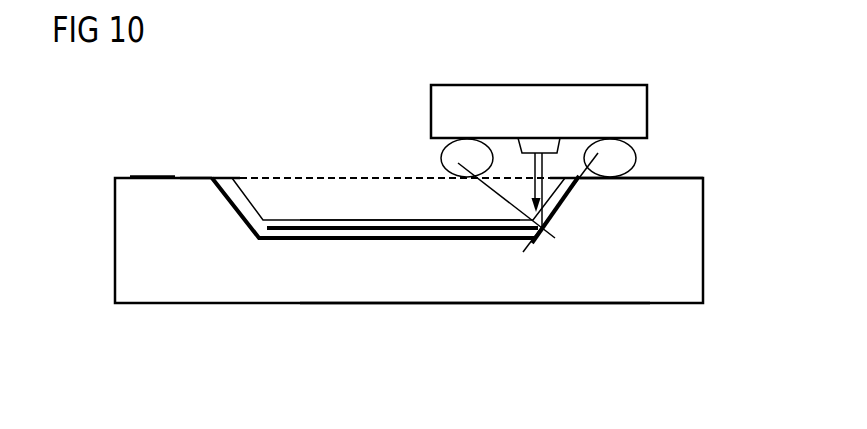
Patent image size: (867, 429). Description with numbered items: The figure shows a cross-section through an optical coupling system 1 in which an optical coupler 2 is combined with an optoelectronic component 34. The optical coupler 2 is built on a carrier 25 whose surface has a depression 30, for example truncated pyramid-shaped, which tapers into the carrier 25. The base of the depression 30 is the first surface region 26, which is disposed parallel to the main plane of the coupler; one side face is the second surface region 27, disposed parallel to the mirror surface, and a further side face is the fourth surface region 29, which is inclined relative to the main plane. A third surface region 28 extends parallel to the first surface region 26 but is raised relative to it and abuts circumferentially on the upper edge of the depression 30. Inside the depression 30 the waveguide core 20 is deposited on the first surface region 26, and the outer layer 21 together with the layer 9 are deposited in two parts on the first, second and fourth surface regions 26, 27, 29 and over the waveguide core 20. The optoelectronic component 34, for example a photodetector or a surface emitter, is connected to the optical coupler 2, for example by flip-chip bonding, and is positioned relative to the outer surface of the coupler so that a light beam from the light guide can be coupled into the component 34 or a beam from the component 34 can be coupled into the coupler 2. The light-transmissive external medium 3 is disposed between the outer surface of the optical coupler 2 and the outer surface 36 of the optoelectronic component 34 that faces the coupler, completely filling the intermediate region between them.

The optical coupling system 1 is at (276, 79).
The optical coupler 2 is at (89, 181).
The light-transmissive external medium 3 is at (426, 210).
The layer 9 is at (240, 203).
The waveguide core 20 is at (314, 231).
The outer layer 21 is at (348, 220).
The carrier 25 is at (587, 296).
The first surface region 26 is at (396, 243).
The second surface region 27 is at (583, 195).
The third surface region 28 is at (203, 176).
The fourth surface region 29 is at (246, 224).
The depression 30 is at (290, 190).
The optoelectronic component 34 is at (411, 102).
The outer surface of the optoelectronic component 36 is at (532, 145).